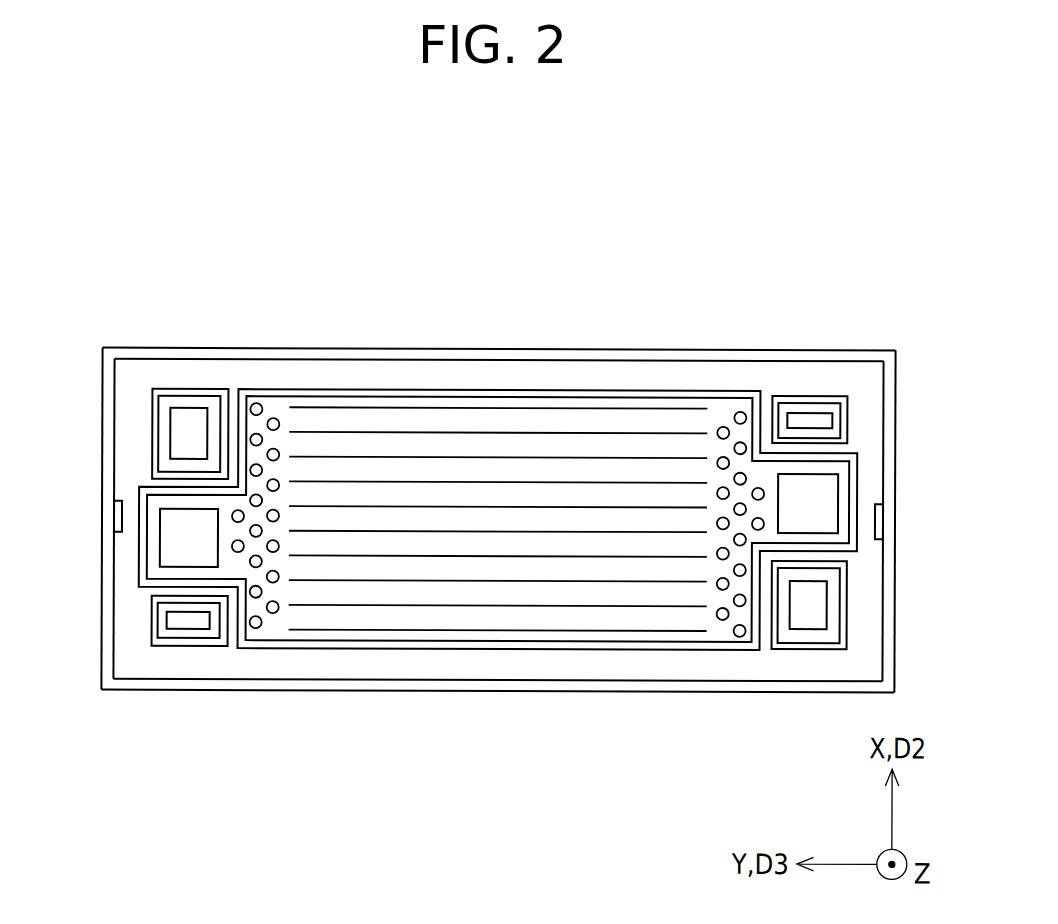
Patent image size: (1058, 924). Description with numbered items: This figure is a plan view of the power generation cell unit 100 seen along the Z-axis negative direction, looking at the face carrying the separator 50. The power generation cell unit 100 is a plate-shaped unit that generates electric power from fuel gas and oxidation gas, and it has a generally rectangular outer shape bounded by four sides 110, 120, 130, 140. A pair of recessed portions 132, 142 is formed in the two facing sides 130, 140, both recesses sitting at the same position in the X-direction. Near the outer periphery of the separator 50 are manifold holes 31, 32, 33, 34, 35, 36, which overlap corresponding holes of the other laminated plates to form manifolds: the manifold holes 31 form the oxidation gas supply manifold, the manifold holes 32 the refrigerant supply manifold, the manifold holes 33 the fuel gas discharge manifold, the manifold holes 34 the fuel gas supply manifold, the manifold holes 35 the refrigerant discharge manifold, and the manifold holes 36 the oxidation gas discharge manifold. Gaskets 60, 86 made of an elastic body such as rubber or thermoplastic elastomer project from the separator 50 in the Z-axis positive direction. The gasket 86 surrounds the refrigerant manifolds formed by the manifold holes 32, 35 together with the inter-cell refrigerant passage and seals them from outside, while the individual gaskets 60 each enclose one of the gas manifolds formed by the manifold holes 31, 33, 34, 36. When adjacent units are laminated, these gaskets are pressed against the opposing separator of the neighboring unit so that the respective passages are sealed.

The power generation cell unit 100 is at (537, 250).
The separator 50 is at (550, 343).
The side 110 is at (442, 692).
The side 120 is at (348, 349).
The side 130 is at (896, 381).
The side 140 is at (101, 378).
The recessed portion 132 is at (882, 521).
The recessed portion 142 is at (114, 518).
The gasket 86 is at (580, 650).
The gaskets 60 is at (212, 390).
The manifold holes 31 is at (180, 422).
The manifold holes 32 is at (182, 535).
The manifold holes 33 is at (180, 620).
The manifold holes 34 is at (820, 421).
The manifold holes 35 is at (815, 487).
The manifold holes 36 is at (815, 605).